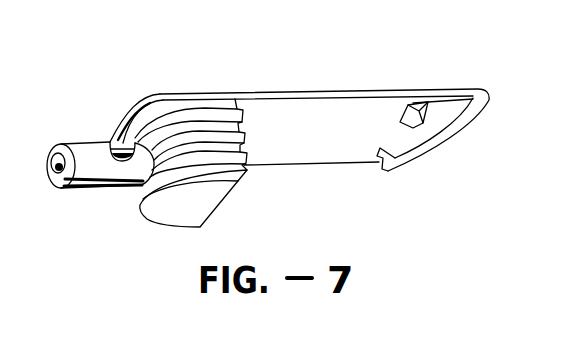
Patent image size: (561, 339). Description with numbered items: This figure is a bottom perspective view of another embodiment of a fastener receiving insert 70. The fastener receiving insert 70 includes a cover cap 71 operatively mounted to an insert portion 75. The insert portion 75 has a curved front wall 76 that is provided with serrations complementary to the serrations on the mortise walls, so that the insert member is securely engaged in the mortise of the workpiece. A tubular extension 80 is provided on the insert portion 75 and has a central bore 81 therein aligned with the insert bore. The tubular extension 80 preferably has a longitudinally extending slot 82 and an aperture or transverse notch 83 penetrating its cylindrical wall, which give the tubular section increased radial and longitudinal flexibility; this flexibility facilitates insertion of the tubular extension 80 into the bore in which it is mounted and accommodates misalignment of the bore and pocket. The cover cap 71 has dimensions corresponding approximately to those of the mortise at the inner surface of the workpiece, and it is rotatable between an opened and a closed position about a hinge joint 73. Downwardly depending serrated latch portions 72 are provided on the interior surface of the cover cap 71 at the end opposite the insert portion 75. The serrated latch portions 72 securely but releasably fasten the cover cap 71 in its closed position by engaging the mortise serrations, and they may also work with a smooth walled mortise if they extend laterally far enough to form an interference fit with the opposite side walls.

The fastener receiving insert 70 is at (310, 84).
The cover cap 71 is at (335, 122).
The serrated latch portions 72 is at (441, 118).
The hinge joint 73 is at (235, 101).
The insert portion 75 is at (192, 118).
The curved front wall 76 is at (131, 141).
The tubular extension 80 is at (87, 163).
The central bore 81 is at (52, 173).
The longitudinally extending slot 82 is at (142, 190).
The transverse notch 83 is at (109, 140).